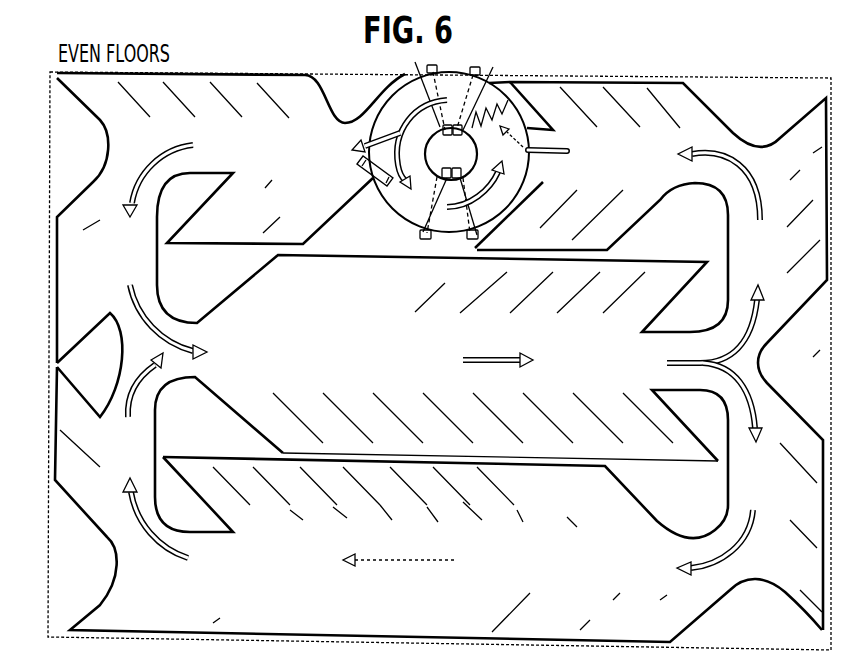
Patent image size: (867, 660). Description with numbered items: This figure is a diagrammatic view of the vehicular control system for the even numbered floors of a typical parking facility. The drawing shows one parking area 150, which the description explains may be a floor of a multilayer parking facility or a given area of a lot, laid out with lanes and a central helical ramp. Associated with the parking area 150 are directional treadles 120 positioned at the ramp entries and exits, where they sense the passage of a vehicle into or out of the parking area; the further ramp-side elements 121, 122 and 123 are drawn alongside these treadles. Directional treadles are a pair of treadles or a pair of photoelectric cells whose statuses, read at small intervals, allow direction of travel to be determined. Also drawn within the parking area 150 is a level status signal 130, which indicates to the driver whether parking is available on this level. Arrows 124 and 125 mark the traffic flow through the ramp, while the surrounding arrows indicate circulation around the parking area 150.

The directional treadles 120 is at (480, 68).
The ramp 121 is at (428, 67).
The ramp 122 is at (470, 240).
The ramp 123 is at (430, 231).
The exit path arrow 124 is at (370, 142).
The circulation arrows 125 is at (474, 206).
The level status signal 130 is at (366, 168).
The parking area 150 is at (250, 105).